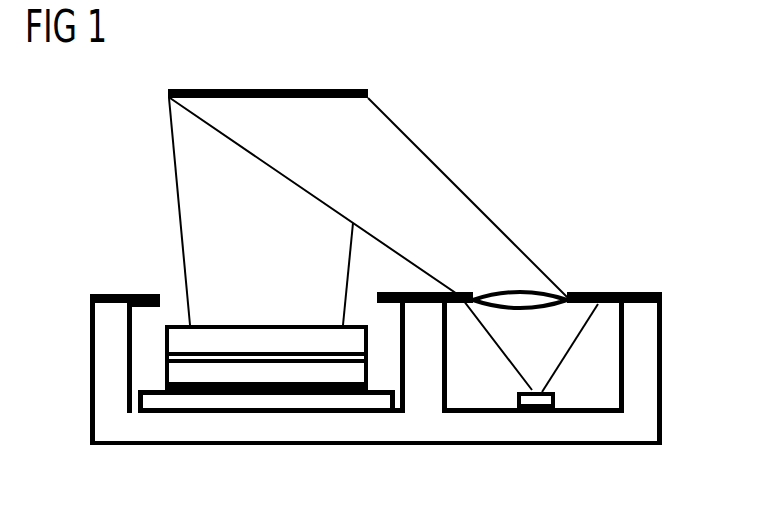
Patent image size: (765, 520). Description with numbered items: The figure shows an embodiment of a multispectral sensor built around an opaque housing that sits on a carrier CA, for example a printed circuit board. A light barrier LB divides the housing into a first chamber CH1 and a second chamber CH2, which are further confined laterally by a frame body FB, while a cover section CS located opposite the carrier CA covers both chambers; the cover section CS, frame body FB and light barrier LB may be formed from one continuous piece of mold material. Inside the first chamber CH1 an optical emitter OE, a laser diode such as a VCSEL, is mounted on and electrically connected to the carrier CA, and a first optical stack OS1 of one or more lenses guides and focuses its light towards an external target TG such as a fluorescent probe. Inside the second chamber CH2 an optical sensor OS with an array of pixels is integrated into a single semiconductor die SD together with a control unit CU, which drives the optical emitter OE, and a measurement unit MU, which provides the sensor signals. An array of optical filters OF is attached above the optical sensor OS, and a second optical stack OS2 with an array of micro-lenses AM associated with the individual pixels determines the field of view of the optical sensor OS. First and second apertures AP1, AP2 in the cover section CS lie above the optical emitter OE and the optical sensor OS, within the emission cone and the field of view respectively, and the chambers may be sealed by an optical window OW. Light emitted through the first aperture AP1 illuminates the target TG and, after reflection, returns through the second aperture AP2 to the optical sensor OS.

The external target TG is at (269, 88).
The cover section CS is at (110, 293).
The first aperture AP1 is at (532, 278).
The second aperture AP2 is at (176, 297).
The light barrier LB is at (420, 296).
The frame body FB is at (650, 308).
The carrier CA is at (364, 437).
The optical window OW is at (137, 318).
The first chamber CH1 is at (600, 402).
The first optical stack OS1 is at (613, 352).
The optical emitter OE is at (538, 400).
The second chamber CH2 is at (392, 357).
The measurement unit MU is at (232, 403).
The control unit CU is at (266, 358).
The second optical stack OS2 is at (167, 353).
The array of micro-lenses AM is at (178, 374).
The semiconductor die SD is at (123, 413).
The array of optical filters OF is at (195, 395).
The optical sensor OS is at (312, 403).